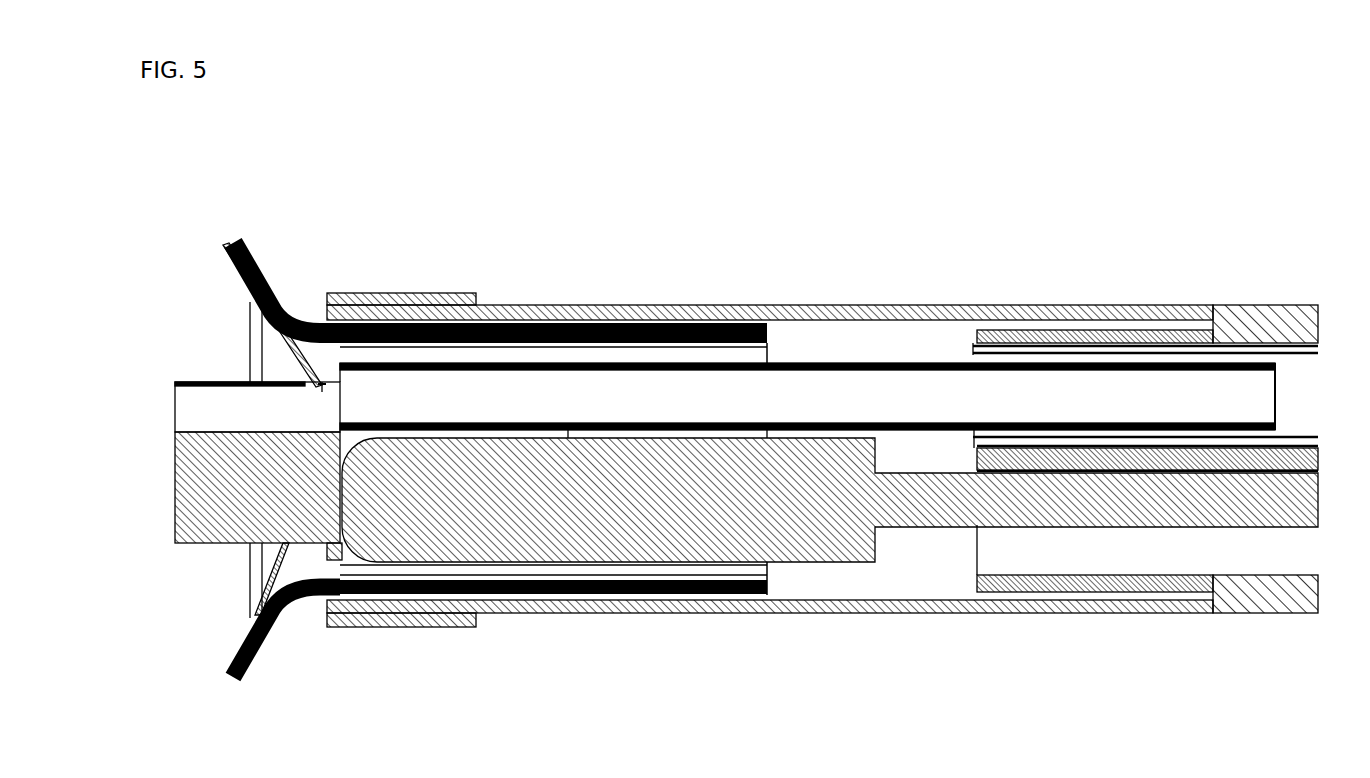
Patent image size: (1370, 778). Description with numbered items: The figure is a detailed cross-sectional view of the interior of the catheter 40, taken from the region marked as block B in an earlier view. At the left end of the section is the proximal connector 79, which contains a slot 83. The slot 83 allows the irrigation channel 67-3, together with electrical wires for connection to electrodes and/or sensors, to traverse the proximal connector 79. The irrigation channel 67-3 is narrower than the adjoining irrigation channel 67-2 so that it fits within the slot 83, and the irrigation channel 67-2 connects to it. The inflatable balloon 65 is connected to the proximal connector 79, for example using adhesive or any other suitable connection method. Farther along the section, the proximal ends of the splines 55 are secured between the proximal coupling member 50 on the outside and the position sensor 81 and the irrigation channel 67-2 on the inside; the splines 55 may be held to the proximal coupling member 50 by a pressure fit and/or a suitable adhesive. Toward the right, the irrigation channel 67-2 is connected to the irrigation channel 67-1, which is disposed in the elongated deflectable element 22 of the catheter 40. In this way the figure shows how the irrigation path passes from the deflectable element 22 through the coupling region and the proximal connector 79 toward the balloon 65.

The catheter 40 is at (1162, 158).
The proximal coupling member 50 is at (822, 305).
The elongated deflectable element 22 is at (1300, 305).
The irrigation channel 67-1 is at (1055, 352).
The irrigation channel 67-2 is at (555, 360).
The irrigation channel 67-3 is at (175, 405).
The splines 55 is at (678, 323).
The inflatable balloon 65 is at (285, 350).
The position sensor 81 is at (822, 562).
The proximal connector 79 is at (197, 543).
The slot 83 is at (223, 383).